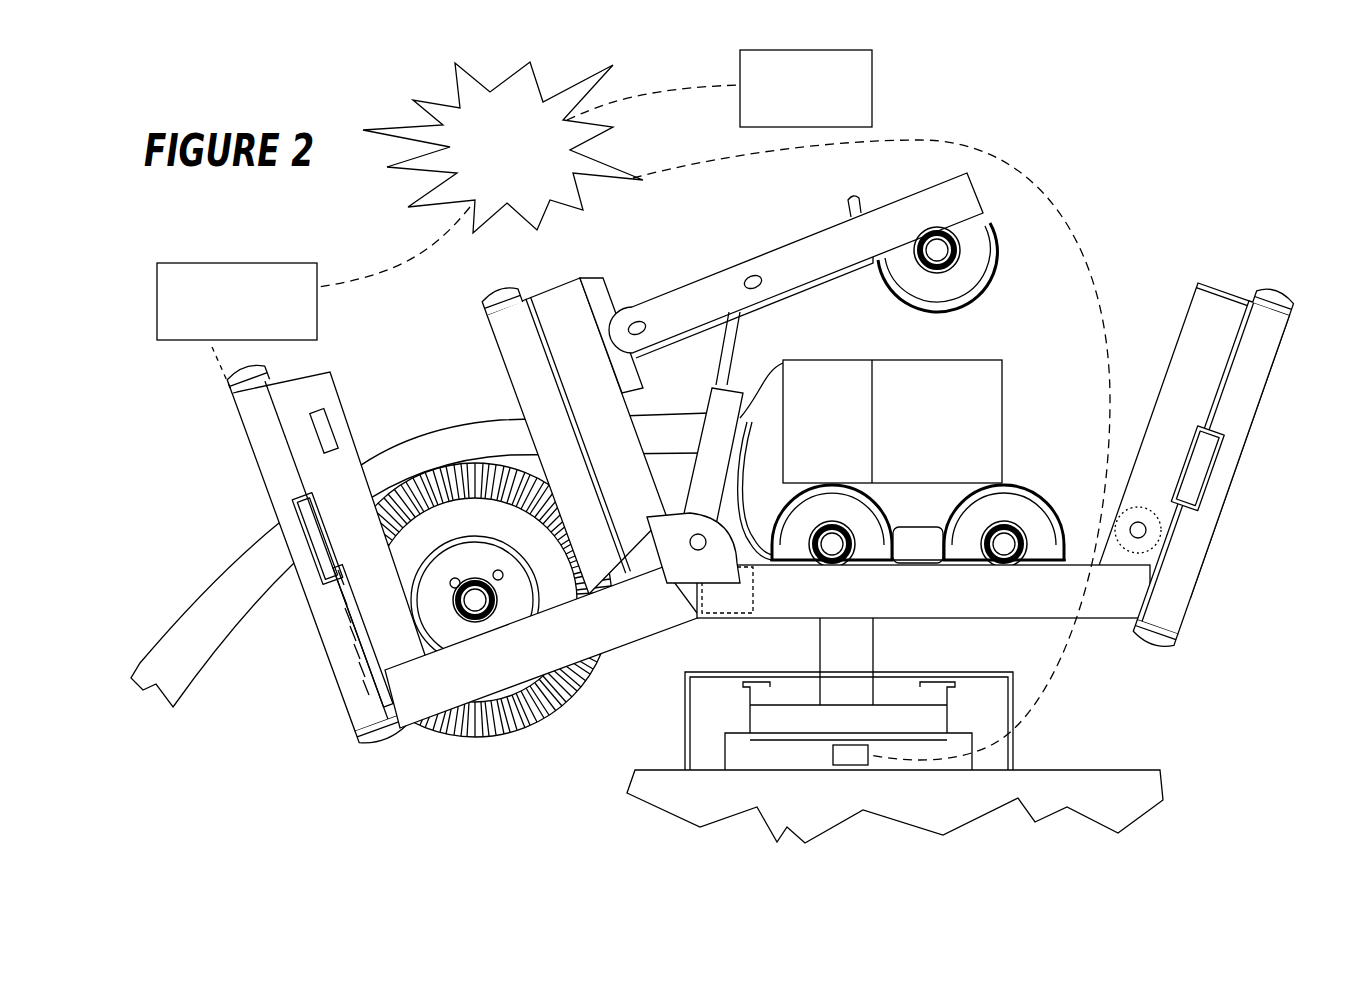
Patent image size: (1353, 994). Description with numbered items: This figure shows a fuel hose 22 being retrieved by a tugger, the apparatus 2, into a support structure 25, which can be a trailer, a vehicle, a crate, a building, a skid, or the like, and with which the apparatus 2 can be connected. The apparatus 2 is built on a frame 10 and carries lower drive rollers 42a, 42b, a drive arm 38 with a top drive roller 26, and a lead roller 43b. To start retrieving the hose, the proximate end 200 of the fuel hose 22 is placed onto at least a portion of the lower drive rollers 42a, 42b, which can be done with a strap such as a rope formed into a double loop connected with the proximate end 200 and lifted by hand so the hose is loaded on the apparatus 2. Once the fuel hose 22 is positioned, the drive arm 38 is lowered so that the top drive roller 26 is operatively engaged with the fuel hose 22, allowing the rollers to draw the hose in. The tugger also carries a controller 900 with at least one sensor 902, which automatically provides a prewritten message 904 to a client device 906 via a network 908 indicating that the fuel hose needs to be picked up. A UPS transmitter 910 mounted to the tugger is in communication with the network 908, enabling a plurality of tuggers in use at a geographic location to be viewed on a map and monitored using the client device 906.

The apparatus 2 is at (720, 498).
The frame 10 is at (1102, 636).
The fuel hose 22 is at (443, 450).
The support structure 25 is at (1097, 787).
The top drive roller 26 is at (993, 275).
The drive arm 38 is at (903, 210).
The lower drive roller 42a is at (777, 518).
The lower drive roller 42b is at (1055, 520).
The lead roller 43b is at (495, 742).
The proximate end 200 is at (903, 370).
The controller 900 is at (268, 262).
The sensor 902 is at (331, 425).
The prewritten message 904 is at (683, 87).
The client device 906 is at (820, 50).
The network 908 is at (507, 78).
The UPS transmitter 910 is at (847, 767).